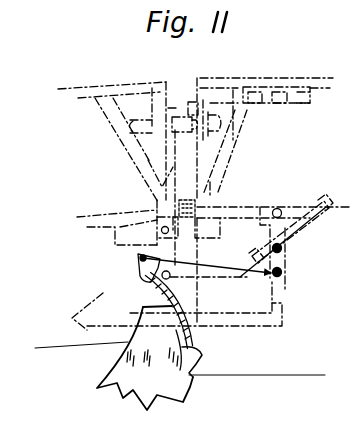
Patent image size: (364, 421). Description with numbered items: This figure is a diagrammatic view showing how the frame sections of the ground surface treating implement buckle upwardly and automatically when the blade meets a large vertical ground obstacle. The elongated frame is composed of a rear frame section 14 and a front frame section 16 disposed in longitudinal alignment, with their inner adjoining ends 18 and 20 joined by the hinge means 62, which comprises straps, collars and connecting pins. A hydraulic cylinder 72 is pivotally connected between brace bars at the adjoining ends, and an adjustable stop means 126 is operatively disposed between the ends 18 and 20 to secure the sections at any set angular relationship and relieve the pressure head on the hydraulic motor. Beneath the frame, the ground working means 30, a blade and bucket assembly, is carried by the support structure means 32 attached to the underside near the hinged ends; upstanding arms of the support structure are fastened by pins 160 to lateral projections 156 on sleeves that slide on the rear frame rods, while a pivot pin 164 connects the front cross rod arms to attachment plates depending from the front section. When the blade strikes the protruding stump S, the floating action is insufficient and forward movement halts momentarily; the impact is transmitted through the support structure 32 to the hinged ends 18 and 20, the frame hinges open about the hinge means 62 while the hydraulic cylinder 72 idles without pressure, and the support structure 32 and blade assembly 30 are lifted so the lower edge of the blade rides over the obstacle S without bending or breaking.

The rear frame section 14 is at (317, 83).
The front frame section 16 is at (73, 97).
The inner adjoining end of rear frame section 18 is at (206, 99).
The inner adjoining end of front frame section 20 is at (170, 147).
The ground working means 30 is at (127, 297).
The support structure means 32 is at (290, 306).
The hinge means 62 is at (193, 198).
The hydraulic cylinder 72 is at (182, 116).
The adjustable stop means 126 is at (174, 93).
The lateral projections 156 is at (292, 208).
The fastening pins 160 is at (280, 208).
The pivot pin 164 is at (163, 228).
The stump obstacle S is at (180, 358).